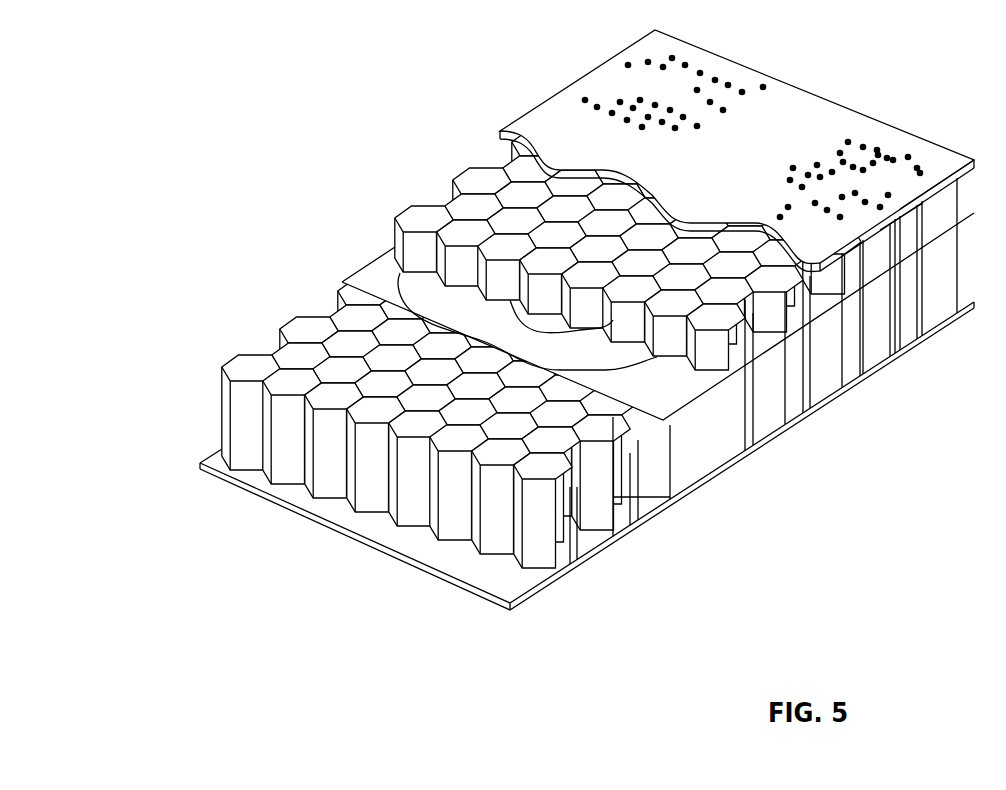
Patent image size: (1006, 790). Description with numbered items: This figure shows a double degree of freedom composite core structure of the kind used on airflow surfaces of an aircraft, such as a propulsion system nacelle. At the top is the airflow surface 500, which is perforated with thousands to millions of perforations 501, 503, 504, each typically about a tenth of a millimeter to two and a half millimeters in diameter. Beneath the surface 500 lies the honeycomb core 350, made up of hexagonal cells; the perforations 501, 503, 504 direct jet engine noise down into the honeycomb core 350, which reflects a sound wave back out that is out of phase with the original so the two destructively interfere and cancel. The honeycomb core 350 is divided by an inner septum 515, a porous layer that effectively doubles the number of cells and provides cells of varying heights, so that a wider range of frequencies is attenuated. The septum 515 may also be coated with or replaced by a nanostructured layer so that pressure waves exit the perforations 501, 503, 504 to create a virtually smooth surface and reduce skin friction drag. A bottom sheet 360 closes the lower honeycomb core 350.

The surface 500 is at (815, 107).
The perforation 501 is at (878, 155).
The perforation 503 is at (920, 173).
The perforation 504 is at (942, 163).
The honeycomb core 350 is at (787, 308).
The back sheet 360 is at (502, 591).
The septum layer 515 is at (368, 275).